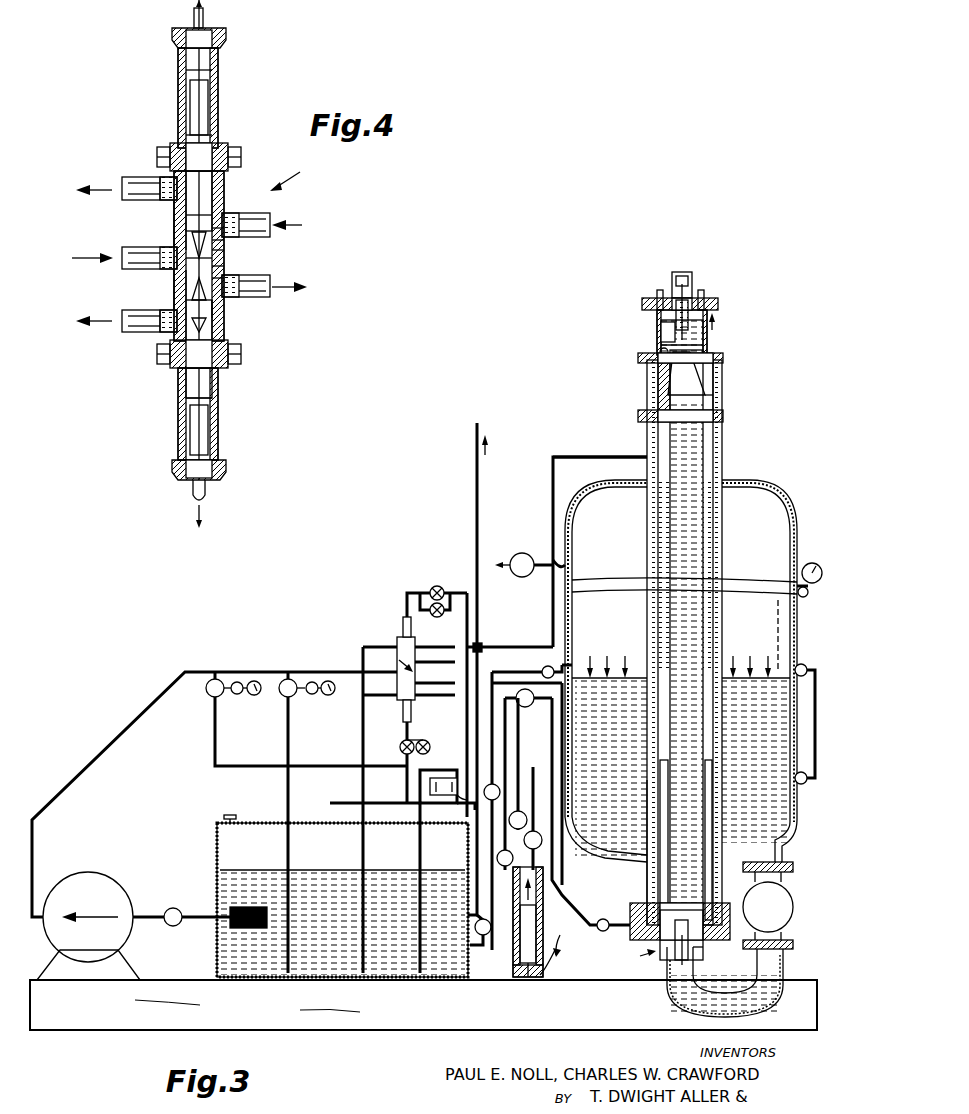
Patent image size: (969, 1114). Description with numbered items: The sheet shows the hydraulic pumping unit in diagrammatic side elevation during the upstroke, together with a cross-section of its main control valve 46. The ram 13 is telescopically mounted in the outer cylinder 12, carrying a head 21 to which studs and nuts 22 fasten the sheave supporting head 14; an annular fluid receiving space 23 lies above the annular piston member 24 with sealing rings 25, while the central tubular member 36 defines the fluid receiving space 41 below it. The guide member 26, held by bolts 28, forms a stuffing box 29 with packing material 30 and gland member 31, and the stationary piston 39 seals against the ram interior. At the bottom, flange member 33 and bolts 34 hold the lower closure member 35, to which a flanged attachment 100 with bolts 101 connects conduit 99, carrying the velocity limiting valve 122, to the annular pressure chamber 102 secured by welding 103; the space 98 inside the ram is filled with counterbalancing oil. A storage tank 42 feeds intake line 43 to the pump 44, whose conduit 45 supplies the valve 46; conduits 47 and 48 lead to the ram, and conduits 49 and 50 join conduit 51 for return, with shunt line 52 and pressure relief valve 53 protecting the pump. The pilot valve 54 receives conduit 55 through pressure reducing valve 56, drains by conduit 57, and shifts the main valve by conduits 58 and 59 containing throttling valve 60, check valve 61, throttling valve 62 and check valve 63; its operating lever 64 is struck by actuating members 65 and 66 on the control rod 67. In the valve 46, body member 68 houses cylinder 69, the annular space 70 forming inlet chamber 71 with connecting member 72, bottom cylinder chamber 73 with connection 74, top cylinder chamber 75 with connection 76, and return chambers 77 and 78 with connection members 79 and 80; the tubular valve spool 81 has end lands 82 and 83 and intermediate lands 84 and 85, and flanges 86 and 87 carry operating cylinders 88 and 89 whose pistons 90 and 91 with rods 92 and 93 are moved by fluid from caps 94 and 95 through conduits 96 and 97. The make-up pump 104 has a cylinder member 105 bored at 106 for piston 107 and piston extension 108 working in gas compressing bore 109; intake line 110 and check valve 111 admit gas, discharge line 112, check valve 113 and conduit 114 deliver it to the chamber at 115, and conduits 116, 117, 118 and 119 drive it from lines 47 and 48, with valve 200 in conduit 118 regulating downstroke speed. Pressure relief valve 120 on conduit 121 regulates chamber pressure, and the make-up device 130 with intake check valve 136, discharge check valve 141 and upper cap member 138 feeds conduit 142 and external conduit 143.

In FIG. 4, the conduit 96 is at (194, 16).
In FIG. 3, the conduit 96 is at (408, 592).
In FIG. 4, the cap 94 is at (224, 32).
In FIG. 4, the operating cylinder 88 is at (178, 90).
In FIG. 3, the operating cylinder 88 is at (403, 627).
In FIG. 4, the operating piston 90 is at (208, 98).
In FIG. 4, the fluid return chamber 77 is at (212, 160).
In FIG. 4, the flange 86 is at (241, 160).
In FIG. 4, the rod 92 is at (222, 190).
In FIG. 4, the body member 68 is at (212, 192).
In FIG. 4, the top cylinder chamber 75 is at (212, 210).
In FIG. 4, the main control valve 46 is at (300, 172).
In FIG. 3, the main control valve 46 is at (412, 654).
In FIG. 4, the connection 76 is at (224, 228).
In FIG. 4, the conduit 49 is at (125, 177).
In FIG. 3, the conduit 49 is at (363, 645).
In FIG. 4, the conduit 48 is at (270, 230).
In FIG. 3, the conduit 48 is at (552, 636).
In FIG. 4, the conduit 45 is at (125, 266).
In FIG. 3, the conduit 45 is at (130, 720).
In FIG. 4, the conduit 47 is at (268, 293).
In FIG. 3, the conduit 47 is at (455, 697).
In FIG. 4, the conduit 50 is at (128, 332).
In FIG. 3, the conduit 50 is at (365, 700).
In FIG. 4, the connection member 79 is at (160, 200).
In FIG. 4, the annular space 70 is at (174, 218).
In FIG. 4, the end land 83 is at (186, 240).
In FIG. 4, the intermediate land 84 is at (224, 242).
In FIG. 4, the fluid inlet chamber 71 is at (212, 258).
In FIG. 4, the cylinder 69 is at (224, 252).
In FIG. 4, the tubular valve spool 81 is at (224, 268).
In FIG. 4, the connecting member 72 is at (174, 275).
In FIG. 4, the bottom cylinder chamber 73 is at (224, 278).
In FIG. 4, the intermediate land 85 is at (186, 292).
In FIG. 4, the connection 74 is at (212, 306).
In FIG. 4, the connection member 80 is at (160, 312).
In FIG. 4, the end land 82 is at (206, 325).
In FIG. 4, the fluid return chamber 78 is at (212, 335).
In FIG. 4, the flange 87 is at (241, 358).
In FIG. 4, the rod 93 is at (212, 383).
In FIG. 4, the operating cylinder 89 is at (218, 418).
In FIG. 3, the operating cylinder 89 is at (411, 712).
In FIG. 4, the operating piston 91 is at (208, 432).
In FIG. 4, the cap 95 is at (226, 470).
In FIG. 4, the conduit 97 is at (193, 490).
In FIG. 3, the conduit 97 is at (403, 724).
In FIG. 3, the high pressure positive displacement pump 44 is at (105, 880).
In FIG. 3, the intake line 43 is at (162, 910).
In FIG. 3, the storage tank 42 is at (217, 845).
In FIG. 3, the pressure reducing valve 56 is at (220, 697).
In FIG. 3, the pressure relief valve 53 is at (284, 697).
In FIG. 3, the shunt line 52 is at (290, 740).
In FIG. 3, the conduit 55 is at (305, 768).
In FIG. 3, the conduit 51 is at (363, 793).
In FIG. 3, the conduit 57 is at (420, 806).
In FIG. 3, the throttling valve 62 is at (440, 586).
In FIG. 3, the check valve 63 is at (440, 617).
In FIG. 3, the conduit 59 is at (466, 760).
In FIG. 3, the throttling valve 60 is at (400, 748).
In FIG. 3, the check valve 61 is at (423, 740).
In FIG. 3, the conduit 58 is at (407, 772).
In FIG. 3, the four-way pilot valve 54 is at (438, 786).
In FIG. 3, the operating lever 64 is at (462, 804).
In FIG. 3, the actuating member 65 is at (464, 812).
In FIG. 3, the control rod 67 is at (480, 516).
In FIG. 3, the conduit 118 is at (483, 652).
In FIG. 3, the conduit 142 is at (640, 455).
In FIG. 3, the conduit 121 is at (590, 565).
In FIG. 3, the pressure relief valve 120 is at (514, 577).
In FIG. 3, the connection to pressure chamber 115 is at (570, 665).
In FIG. 3, the conduit 116 is at (506, 705).
In FIG. 3, the conduit 117 is at (492, 870).
In FIG. 3, the discharge line 112 is at (505, 850).
In FIG. 3, the conduit 114 is at (533, 770).
In FIG. 3, the check valve 113 is at (533, 815).
In FIG. 3, the intake line 110 is at (527, 823).
In FIG. 3, the check valve 111 is at (542, 843).
In FIG. 3, the bore 106 is at (536, 978).
In FIG. 3, the piston 107 is at (520, 960).
In FIG. 3, the piston extension 108 is at (528, 978).
In FIG. 3, the valve 200 is at (492, 930).
In FIG. 3, the conduit 119 is at (477, 912).
In FIG. 3, the actuating member 66 is at (470, 920).
In FIG. 3, the make-up pump 104 is at (548, 978).
In FIG. 3, the gas compressing bore 109 is at (560, 950).
In FIG. 3, the external conduit 143 is at (583, 910).
In FIG. 3, the cylinder member 105 is at (578, 916).
In FIG. 3, the welding 103 is at (738, 478).
In FIG. 3, the outer cylinder 12 is at (724, 450).
In FIG. 3, the guide member 26 is at (705, 405).
In FIG. 3, the annular fluid receiving space 23 is at (650, 512).
In FIG. 3, the fluid receiving space 41 is at (658, 868).
In FIG. 3, the annular piston member 24 is at (647, 840).
In FIG. 3, the central tubular member 36 is at (712, 642).
In FIG. 3, the annular pressure chamber 102 is at (790, 610).
In FIG. 3, the sealing rings 25 is at (756, 870).
In FIG. 3, the flange member 33 is at (742, 875).
In FIG. 3, the lower closure member 35 is at (722, 928).
In FIG. 3, the conduit 99 is at (667, 1000).
In FIG. 3, the bolts 34 is at (632, 930).
In FIG. 3, the velocity limiting valve 122 is at (656, 955).
In FIG. 3, the bolts 101 is at (688, 950).
In FIG. 3, the flanged attachment 100 is at (703, 948).
In FIG. 3, the ram 13 is at (707, 322).
In FIG. 3, the head 21 is at (707, 314).
In FIG. 3, the sheave supporting head 14 is at (718, 300).
In FIG. 3, the studs and nuts 22 is at (657, 298).
In FIG. 3, the intake check valve 136 is at (692, 275).
In FIG. 3, the upper cap member 138 is at (683, 280).
In FIG. 3, the make-up device 130 is at (672, 290).
In FIG. 3, the space 98 is at (661, 330).
In FIG. 3, the discharge check valve 141 is at (655, 342).
In FIG. 3, the gland member 31 is at (705, 370).
In FIG. 3, the stuffing box 29 is at (713, 390).
In FIG. 3, the packing material 30 is at (720, 400).
In FIG. 3, the stationary piston 39 is at (650, 385).
In FIG. 3, the bolts 28 is at (640, 415).